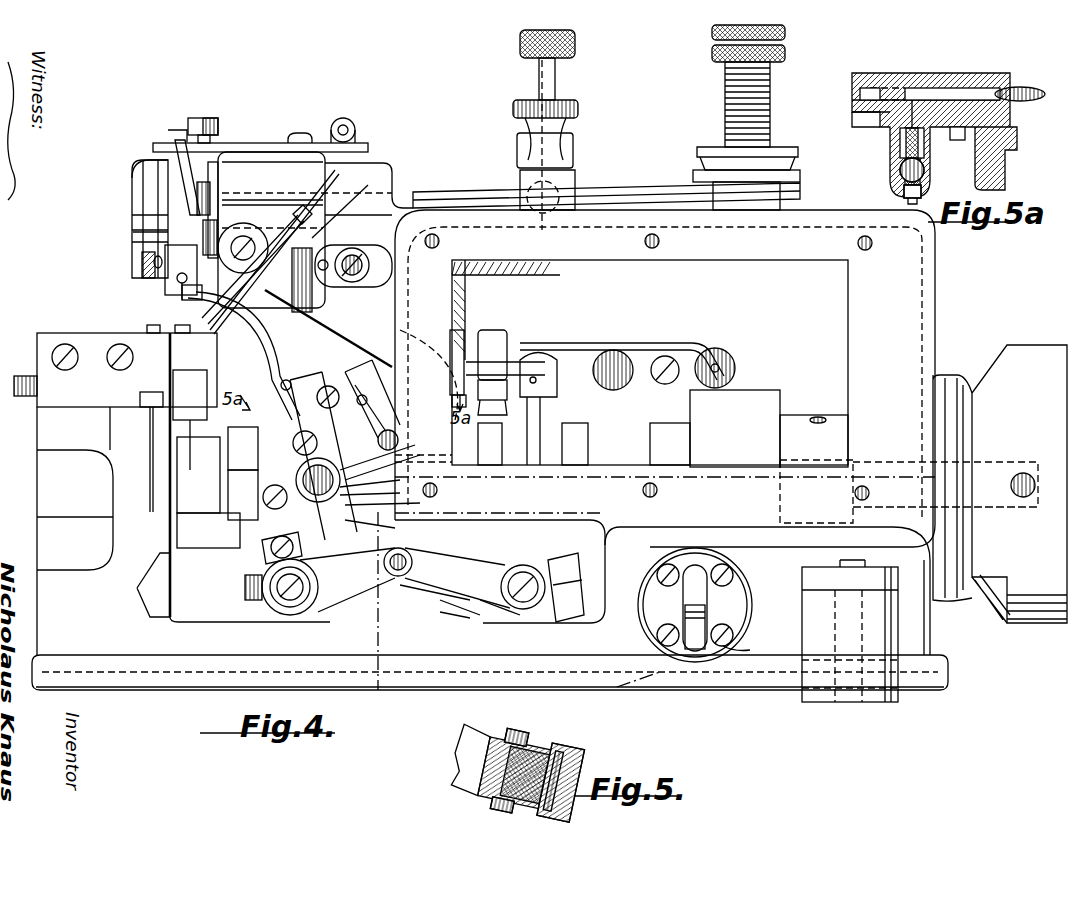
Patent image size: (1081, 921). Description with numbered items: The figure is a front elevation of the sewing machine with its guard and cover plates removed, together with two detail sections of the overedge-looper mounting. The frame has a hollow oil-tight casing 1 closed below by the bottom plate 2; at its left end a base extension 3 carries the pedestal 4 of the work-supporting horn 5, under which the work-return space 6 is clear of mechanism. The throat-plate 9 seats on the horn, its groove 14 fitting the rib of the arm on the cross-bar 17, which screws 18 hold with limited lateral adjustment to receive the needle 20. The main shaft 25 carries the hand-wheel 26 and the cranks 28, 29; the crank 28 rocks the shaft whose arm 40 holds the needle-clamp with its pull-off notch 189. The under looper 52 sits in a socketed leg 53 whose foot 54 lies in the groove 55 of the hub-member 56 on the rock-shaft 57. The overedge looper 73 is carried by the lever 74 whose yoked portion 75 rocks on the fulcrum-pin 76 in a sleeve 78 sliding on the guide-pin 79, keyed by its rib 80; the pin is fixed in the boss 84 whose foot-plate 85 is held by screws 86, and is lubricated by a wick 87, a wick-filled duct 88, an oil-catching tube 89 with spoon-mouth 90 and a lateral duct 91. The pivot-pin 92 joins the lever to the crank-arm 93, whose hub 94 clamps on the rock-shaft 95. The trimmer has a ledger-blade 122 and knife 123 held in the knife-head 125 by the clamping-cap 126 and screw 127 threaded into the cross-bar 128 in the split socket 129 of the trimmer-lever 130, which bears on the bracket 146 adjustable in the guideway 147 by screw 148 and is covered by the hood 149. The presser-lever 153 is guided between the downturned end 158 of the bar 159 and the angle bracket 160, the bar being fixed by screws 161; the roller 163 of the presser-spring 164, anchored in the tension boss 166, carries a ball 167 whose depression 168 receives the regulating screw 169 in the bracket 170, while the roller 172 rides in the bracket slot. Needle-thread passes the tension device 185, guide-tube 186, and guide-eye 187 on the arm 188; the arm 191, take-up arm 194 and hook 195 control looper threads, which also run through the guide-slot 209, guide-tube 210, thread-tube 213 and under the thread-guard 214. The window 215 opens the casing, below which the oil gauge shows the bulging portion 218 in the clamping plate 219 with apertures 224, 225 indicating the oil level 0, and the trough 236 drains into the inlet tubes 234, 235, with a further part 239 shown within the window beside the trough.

In FIG. 4, the oil level 0 is at (700, 600).
In FIG. 4, the hollow oil-tight casing 1 is at (880, 333).
In FIG. 5A, the hollow oil-tight casing 1 is at (1000, 142).
In FIG. 4, the bottom plate 2 is at (676, 690).
In FIG. 4, the base extension 3 is at (133, 687).
In FIG. 4, the pedestal 4 is at (162, 548).
In FIG. 4, the work-supporting horn 5 is at (37, 412).
In FIG. 4, the work-return space 6 is at (80, 560).
In FIG. 4, the throat-plate 9 is at (98, 340).
In FIG. 4, the groove 14 is at (165, 333).
In FIG. 4, the cross-bar 17 is at (62, 345).
In FIG. 4, the screws 18 is at (108, 365).
In FIG. 4, the needle 20 is at (180, 296).
In FIG. 4, the main shaft 25 is at (868, 465).
In FIG. 4, the belt-pulley and hand-wheel 26 is at (1018, 345).
In FIG. 4, the intermediate crank 28 is at (312, 352).
In FIG. 4, the crank 29 is at (418, 462).
In FIG. 4, the arm 40 is at (192, 256).
In FIG. 4, the under looper 52 is at (265, 335).
In FIG. 4, the socketed leg 53 is at (243, 448).
In FIG. 4, the foot 54 is at (262, 548).
In FIG. 4, the groove 55 is at (265, 558).
In FIG. 4, the hub-member 56 is at (245, 588).
In FIG. 4, the rock-shaft 57 is at (276, 610).
In FIG. 4, the overedge looper 73 is at (180, 290).
In FIG. 4, the overedge looper-lever 74 is at (393, 503).
In FIG. 4, the yoked central portion 75 is at (377, 476).
In FIG. 4, the fulcrum-pin 76 is at (377, 491).
In FIG. 4, the sleeve 78 is at (379, 527).
In FIG. 4, the guide-pin 79 is at (318, 614).
In FIG. 5A, the guide-pin 79 is at (900, 178).
In FIG. 4, the longitudinal rib 80 is at (338, 614).
In FIG. 4, the socketed boss 84 is at (378, 332).
In FIG. 5A, the socketed boss 84 is at (903, 155).
In FIG. 4, the foot-plate 85 is at (288, 378).
In FIG. 5A, the foot-plate 85 is at (858, 125).
In FIG. 4, the screws 86 is at (395, 433).
In FIG. 5A, the screws 86 is at (858, 94).
In FIG. 5A, the wick 87 is at (906, 194).
In FIG. 5A, the wick-filled duct 88 is at (903, 140).
In FIG. 4, the oil-catching tube 89 is at (429, 375).
In FIG. 5A, the oil-catching tube 89 is at (985, 88).
In FIG. 4, the spoon-mouth 90 is at (490, 362).
In FIG. 5A, the spoon-mouth 90 is at (1030, 88).
In FIG. 4, the lateral duct 91 is at (368, 368).
In FIG. 5A, the lateral duct 91 is at (915, 100).
In FIG. 4, the pivot-pin 92 is at (398, 576).
In FIG. 4, the crank-arm 93 is at (470, 595).
In FIG. 5, the crank-arm 93 is at (475, 790).
In FIG. 4, the hub 94 is at (572, 570).
In FIG. 5, the hub 94 is at (512, 735).
In FIG. 4, the rock-shaft 95 is at (530, 610).
In FIG. 5, the rock-shaft 95 is at (552, 748).
In FIG. 4, the ledger-blade 122 is at (150, 420).
In FIG. 4, the trimmer-knife 123 is at (240, 318).
In FIG. 4, the knife-head 125 is at (330, 296).
In FIG. 4, the clamping-cap 126 is at (233, 230).
In FIG. 4, the screw 127 is at (280, 208).
In FIG. 4, the cylindrical cross-bar 128 is at (300, 215).
In FIG. 4, the split socket 129 is at (350, 205).
In FIG. 4, the trimmer-lever 130 is at (340, 213).
In FIG. 4, the frame-bracket 146 is at (352, 242).
In FIG. 4, the guideway 147 is at (400, 232).
In FIG. 4, the screw 148 is at (362, 258).
In FIG. 4, the frame hood 149 is at (262, 143).
In FIG. 4, the presser-lever 153 is at (142, 266).
In FIG. 4, the downturned end 158 is at (132, 188).
In FIG. 4, the bar 159 is at (232, 143).
In FIG. 4, the angle bracket 160 is at (136, 168).
In FIG. 4, the screws 161 is at (205, 125).
In FIG. 4, the roller 163 is at (132, 216).
In FIG. 4, the presser-spring 164 is at (632, 190).
In FIG. 4, the tension boss 166 is at (770, 200).
In FIG. 4, the ball 167 is at (530, 183).
In FIG. 4, the depression 168 is at (545, 225).
In FIG. 4, the regulating screw 169 is at (556, 85).
In FIG. 4, the frame bracket 170 is at (568, 150).
In FIG. 4, the roller 172 is at (133, 233).
In FIG. 4, the tension device 185 is at (780, 150).
In FIG. 4, the guide-tube 186 is at (213, 200).
In FIG. 4, the guide-eye 187 is at (178, 160).
In FIG. 4, the arm 188 is at (185, 140).
In FIG. 4, the V-shaped notch 189 is at (154, 264).
In FIG. 4, the arm 191 is at (395, 605).
In FIG. 4, the thread-take-up arm 194 is at (483, 612).
In FIG. 4, the hook 195 is at (440, 618).
In FIG. 4, the guide-slot 209 is at (177, 445).
In FIG. 4, the guide-tube 210 is at (140, 400).
In FIG. 4, the thread-tube 213 is at (400, 445).
In FIG. 4, the thread-guard 214 is at (330, 335).
In FIG. 4, the window 215 is at (842, 304).
In FIG. 4, the bulging diametrical portion 218 is at (745, 605).
In FIG. 4, the clamping plate 219 is at (752, 650).
In FIG. 4, the aperture 224 is at (705, 572).
In FIG. 4, the aperture 225 is at (655, 645).
In FIG. 4, the oil-catching inlet tube 234 is at (452, 345).
In FIG. 4, the oil-catching inlet tube 235 is at (736, 370).
In FIG. 4, the oil-spray-catching trough 236 is at (610, 343).
In FIG. 4, the roller 239 is at (610, 378).